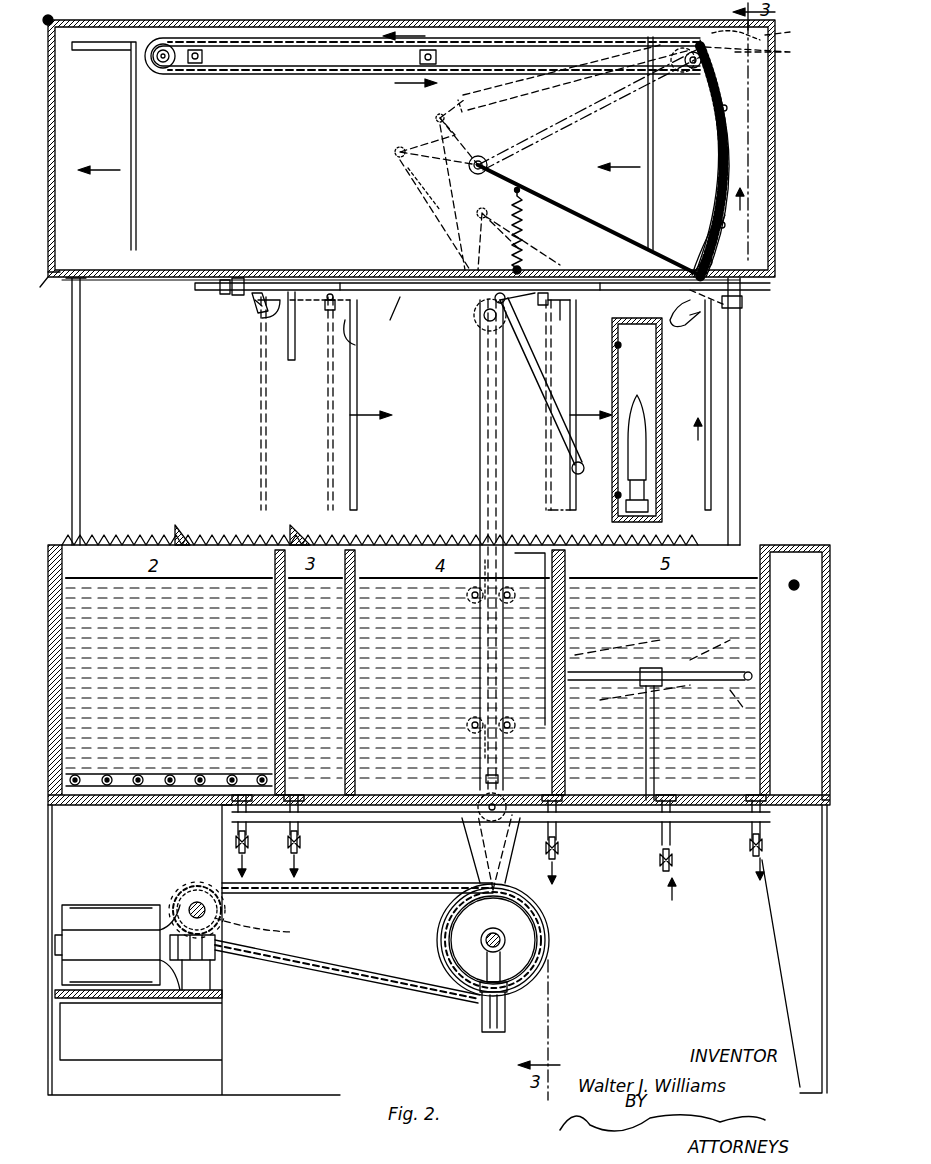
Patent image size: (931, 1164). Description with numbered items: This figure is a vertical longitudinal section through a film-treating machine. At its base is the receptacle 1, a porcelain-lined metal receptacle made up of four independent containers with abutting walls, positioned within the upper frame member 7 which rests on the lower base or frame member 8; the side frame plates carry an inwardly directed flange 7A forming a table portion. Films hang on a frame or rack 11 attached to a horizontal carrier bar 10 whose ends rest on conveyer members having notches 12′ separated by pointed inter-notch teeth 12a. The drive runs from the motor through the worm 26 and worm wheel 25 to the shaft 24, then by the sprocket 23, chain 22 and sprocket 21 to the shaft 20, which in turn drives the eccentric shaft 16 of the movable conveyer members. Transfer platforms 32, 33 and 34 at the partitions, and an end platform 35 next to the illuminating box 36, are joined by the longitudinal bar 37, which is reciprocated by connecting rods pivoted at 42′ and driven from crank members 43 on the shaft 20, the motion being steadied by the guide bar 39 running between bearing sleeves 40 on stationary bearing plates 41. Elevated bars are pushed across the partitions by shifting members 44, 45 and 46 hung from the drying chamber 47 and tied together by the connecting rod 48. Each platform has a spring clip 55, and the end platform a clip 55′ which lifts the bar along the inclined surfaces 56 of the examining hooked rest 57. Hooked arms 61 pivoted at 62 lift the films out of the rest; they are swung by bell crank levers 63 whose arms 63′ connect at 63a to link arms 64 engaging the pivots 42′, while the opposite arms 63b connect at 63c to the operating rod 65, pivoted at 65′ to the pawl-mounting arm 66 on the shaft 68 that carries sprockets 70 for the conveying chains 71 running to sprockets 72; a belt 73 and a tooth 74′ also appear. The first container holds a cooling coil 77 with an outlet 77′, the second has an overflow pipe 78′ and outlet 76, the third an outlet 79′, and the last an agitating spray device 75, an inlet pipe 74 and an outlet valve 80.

The receptacle 1 is at (705, 815).
The upper frame member 7 is at (822, 733).
The inwardly directed flange 7A is at (183, 530).
The lower base or frame member 8 is at (790, 900).
The carrier bar 10 is at (290, 283).
The frame or rack 11 is at (653, 145).
The inter-notch teeth 12a is at (130, 535).
The notches 12′ is at (240, 535).
The shaft 16 is at (806, 565).
The shaft 20 is at (505, 940).
The sprocket 21 is at (455, 908).
The chain 22 is at (365, 965).
The sprocket 23 is at (264, 930).
The shaft 24 is at (205, 910).
The worm wheel 25 is at (200, 868).
The worm 26 is at (215, 955).
The transfer platform 32 is at (248, 318).
The transfer platform 33 is at (320, 315).
The transfer platform 34 is at (575, 330).
The transfer platform 35 is at (742, 302).
The illuminating box 36 is at (662, 455).
The longitudinal bar 37 is at (396, 319).
The guide bar 39 is at (480, 463).
The bearing sleeves 40 is at (500, 568).
The stationary bearing plates 41 is at (470, 838).
The pivot 42′ is at (475, 325).
The crank members 43 is at (475, 865).
The shifting member 44 is at (285, 340).
The shifting member 45 is at (352, 345).
The shifting member 46 is at (530, 320).
The drying chamber 47 is at (55, 222).
The connecting rod 48 is at (258, 283).
The spring clip 55 is at (252, 296).
The clip 55′ is at (712, 220).
The inclined surfaces 56 is at (695, 325).
The examining hooked rest 57 is at (690, 265).
The hooked arms 61 is at (608, 95).
The pivot 62 is at (488, 163).
The bell crank levers 63 is at (563, 105).
The connection 63a is at (395, 153).
The arms 63b is at (449, 94).
The pivotal connection 63c is at (436, 118).
The arms 63′ is at (415, 182).
The link arms 64 is at (440, 246).
The operating rod 65 is at (479, 91).
The pivot 65′ is at (764, 32).
The pawl-mounting arm 66 is at (758, 56).
The shaft 68 is at (705, 62).
The sprockets 70 is at (685, 70).
The conveying chains 71 is at (270, 45).
The sprockets 72 is at (172, 66).
The belt 73 is at (730, 147).
The inlet pipe 74 is at (660, 878).
The tooth 74′ is at (303, 530).
The agitating spray device 75 is at (740, 672).
The outlet 76 is at (340, 808).
The cooling coil 77 is at (158, 778).
The outlet 77′ is at (262, 860).
The overflow pipe 78′ is at (300, 855).
The outlet 79′ is at (558, 858).
The valve 80 is at (750, 838).